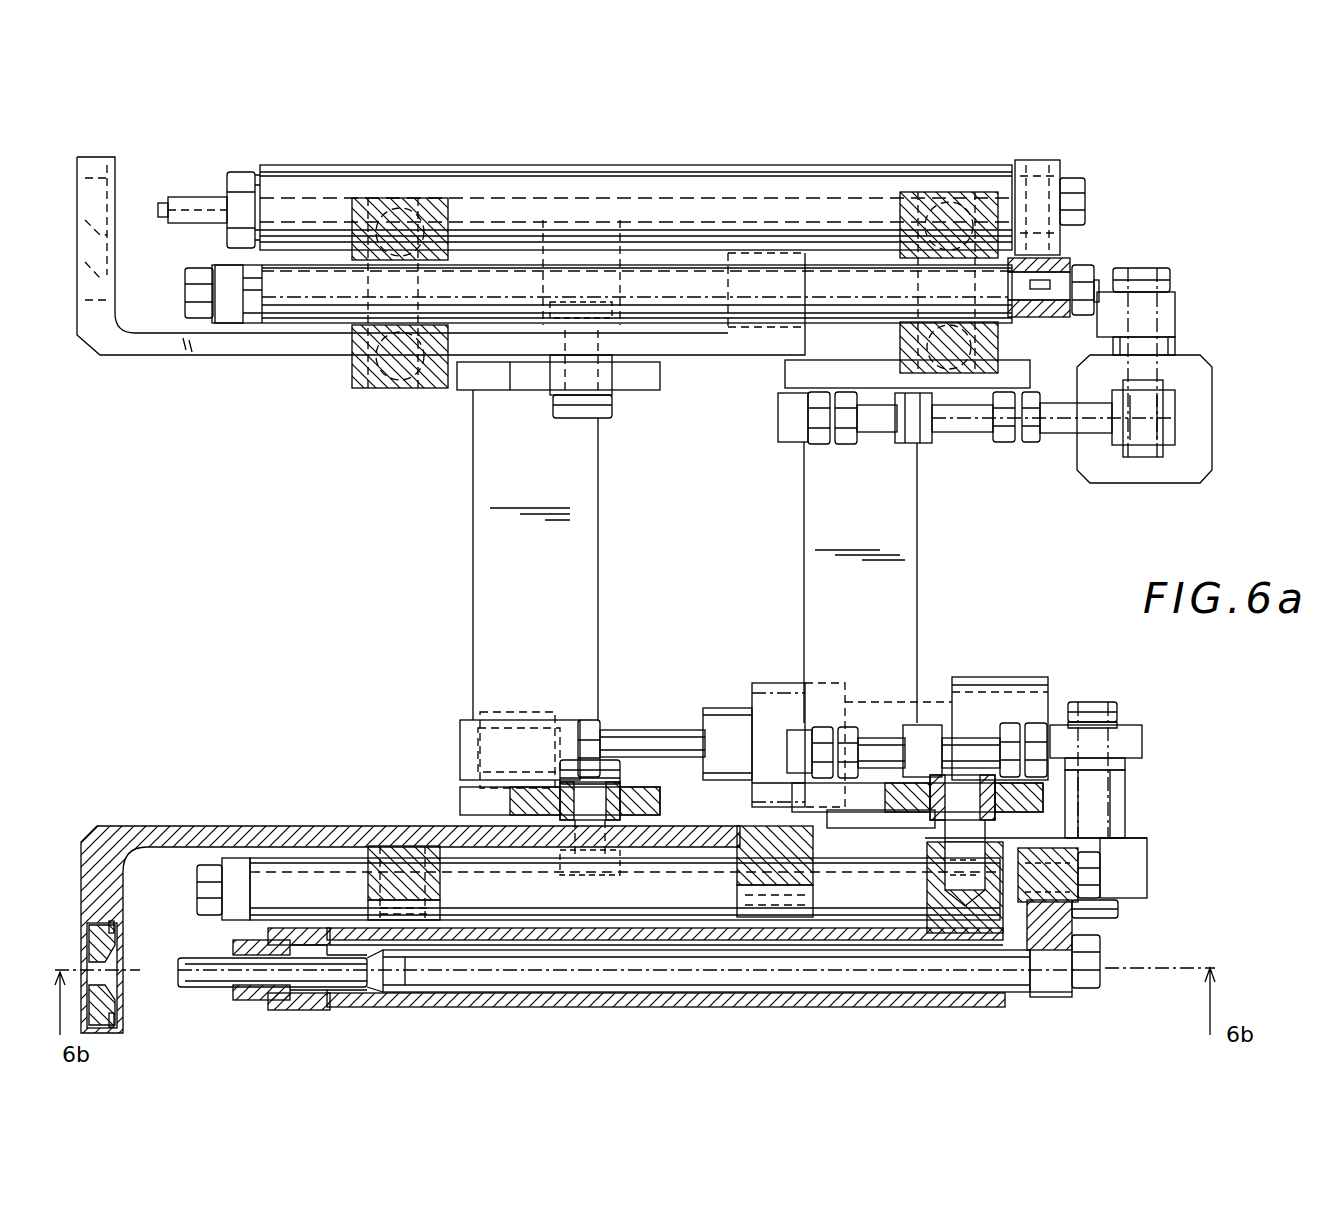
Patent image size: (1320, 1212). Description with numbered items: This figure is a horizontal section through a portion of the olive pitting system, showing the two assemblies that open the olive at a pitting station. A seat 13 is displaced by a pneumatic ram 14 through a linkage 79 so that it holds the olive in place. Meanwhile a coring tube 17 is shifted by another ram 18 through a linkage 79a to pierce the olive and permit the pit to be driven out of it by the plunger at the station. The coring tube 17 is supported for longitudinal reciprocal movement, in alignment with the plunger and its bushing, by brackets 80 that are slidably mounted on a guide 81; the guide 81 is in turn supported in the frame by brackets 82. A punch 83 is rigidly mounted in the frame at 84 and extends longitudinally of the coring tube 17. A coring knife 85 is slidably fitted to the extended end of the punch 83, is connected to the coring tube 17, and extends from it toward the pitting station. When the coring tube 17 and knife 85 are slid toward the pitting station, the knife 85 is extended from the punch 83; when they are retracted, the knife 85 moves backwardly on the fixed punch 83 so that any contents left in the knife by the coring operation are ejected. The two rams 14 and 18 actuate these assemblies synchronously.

The seat 13 is at (145, 357).
The pneumatic ram 14 is at (730, 720).
The coring tube 17 is at (697, 211).
The ram 18 is at (1178, 474).
The linkage 79 is at (665, 748).
The linkage 79a is at (1063, 428).
The brackets 80 is at (545, 284).
The guide 81 is at (690, 294).
The brackets 82 is at (452, 213).
The punch 83 is at (172, 205).
The mounting in the frame 84 is at (1088, 218).
The coring knife 85 is at (178, 232).